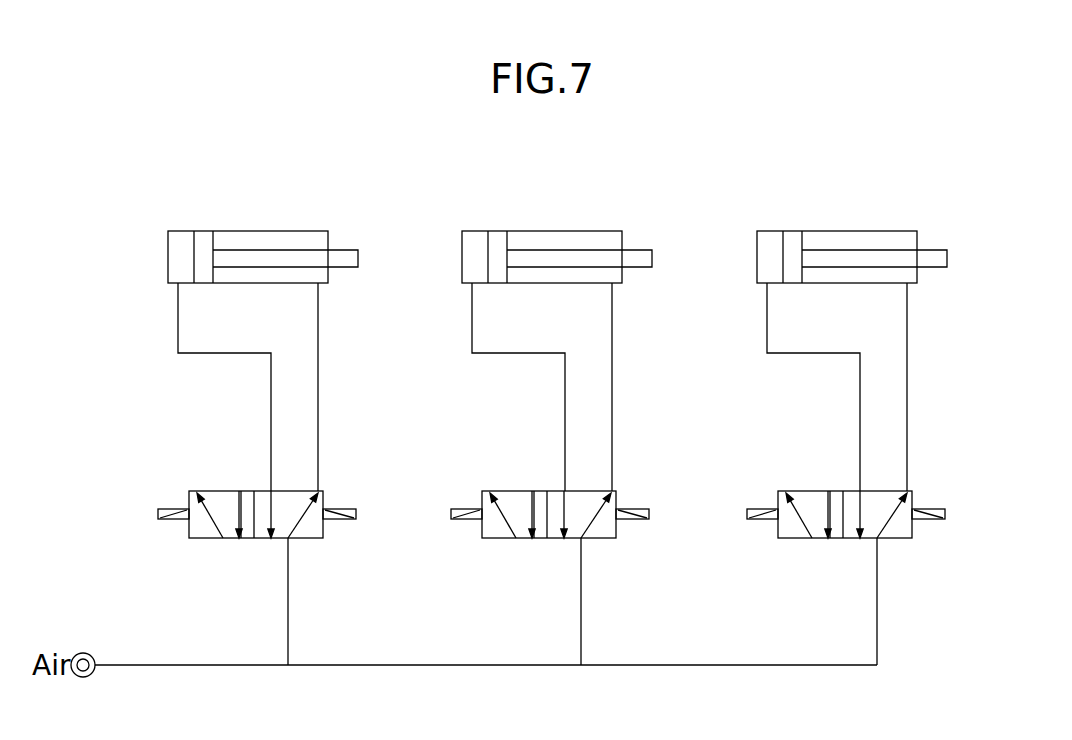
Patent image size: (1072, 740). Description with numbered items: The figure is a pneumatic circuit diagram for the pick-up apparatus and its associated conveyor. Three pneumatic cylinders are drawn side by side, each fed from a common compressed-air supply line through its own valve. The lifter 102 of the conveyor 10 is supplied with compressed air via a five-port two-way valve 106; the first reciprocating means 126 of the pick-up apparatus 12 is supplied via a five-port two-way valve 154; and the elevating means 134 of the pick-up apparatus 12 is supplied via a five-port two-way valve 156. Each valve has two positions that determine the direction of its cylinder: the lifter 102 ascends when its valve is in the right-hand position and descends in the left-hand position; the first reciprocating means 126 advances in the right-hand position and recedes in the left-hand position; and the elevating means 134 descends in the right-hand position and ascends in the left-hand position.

The conveyor 10 is at (292, 422).
The pick-up apparatus 12 is at (895, 407).
The lifter 102 is at (268, 231).
The 5-port 2-way valve 106 is at (220, 491).
The first reciprocating means 126 is at (562, 231).
The 5-port 2-way valve 154 is at (513, 491).
The elevating means 134 is at (857, 231).
The 5-port 2-way valve 156 is at (809, 491).